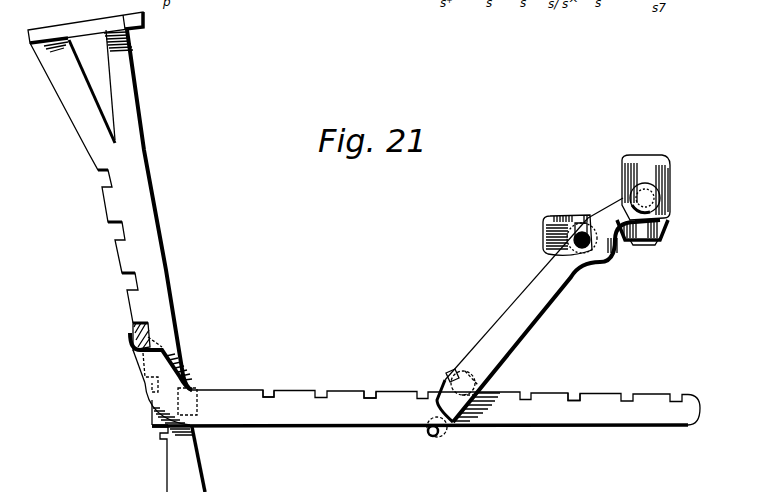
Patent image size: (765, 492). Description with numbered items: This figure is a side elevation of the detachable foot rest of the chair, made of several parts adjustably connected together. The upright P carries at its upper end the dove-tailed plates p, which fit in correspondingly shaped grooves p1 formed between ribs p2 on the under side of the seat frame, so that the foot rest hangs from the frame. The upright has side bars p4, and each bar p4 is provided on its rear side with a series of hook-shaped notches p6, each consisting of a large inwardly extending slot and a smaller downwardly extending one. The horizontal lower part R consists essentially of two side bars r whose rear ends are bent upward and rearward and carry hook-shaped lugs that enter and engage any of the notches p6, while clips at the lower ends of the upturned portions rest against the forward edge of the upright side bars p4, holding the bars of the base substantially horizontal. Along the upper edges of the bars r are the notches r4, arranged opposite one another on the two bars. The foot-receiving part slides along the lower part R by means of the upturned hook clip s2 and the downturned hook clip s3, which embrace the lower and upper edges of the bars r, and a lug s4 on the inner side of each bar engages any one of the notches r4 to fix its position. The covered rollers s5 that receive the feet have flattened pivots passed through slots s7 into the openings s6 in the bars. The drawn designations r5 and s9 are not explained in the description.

The top plate of post p is at (60, 32).
The plate end p1 is at (201, 17).
The post P is at (158, 224).
The post rear edge p4 is at (162, 270).
The notched teeth of post p6 is at (122, 283).
The hook of post p2 is at (132, 335).
The dashed socket of rail r5 is at (193, 406).
The rail R is at (426, 397).
The rail notch r4 is at (270, 391).
The rail notch r is at (336, 402).
The lever arm s4 is at (500, 376).
The lever foot block s3 is at (458, 382).
The lever pivot pin s2 is at (435, 437).
The lever boss s5 is at (672, 158).
The pivot pin s7 is at (588, 218).
The boss shoulder s6 is at (578, 270).
The boss lower lug s9 is at (645, 240).